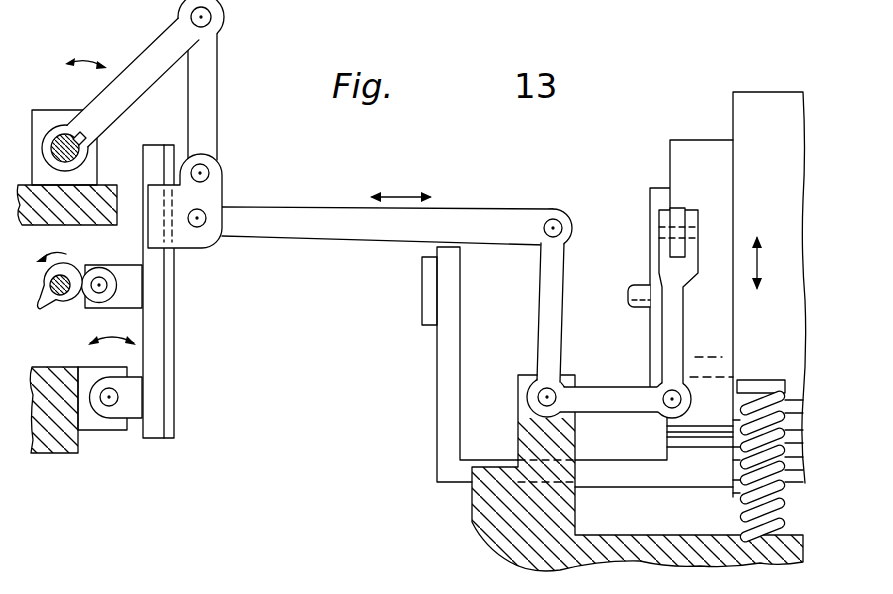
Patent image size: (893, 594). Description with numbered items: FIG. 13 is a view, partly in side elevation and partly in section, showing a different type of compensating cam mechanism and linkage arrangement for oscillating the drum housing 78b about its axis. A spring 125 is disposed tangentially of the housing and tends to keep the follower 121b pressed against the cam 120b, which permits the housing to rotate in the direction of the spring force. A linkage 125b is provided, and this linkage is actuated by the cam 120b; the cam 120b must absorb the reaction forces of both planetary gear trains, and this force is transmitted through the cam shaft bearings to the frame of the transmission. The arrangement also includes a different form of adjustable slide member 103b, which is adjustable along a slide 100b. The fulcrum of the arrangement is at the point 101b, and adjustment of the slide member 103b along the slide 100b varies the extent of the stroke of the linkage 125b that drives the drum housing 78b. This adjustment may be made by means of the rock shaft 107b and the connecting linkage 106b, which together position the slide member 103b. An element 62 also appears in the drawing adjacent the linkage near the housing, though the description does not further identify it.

The connecting linkage 106b is at (150, 48).
The rock shaft 107b is at (62, 138).
The adjustable slide member 103b is at (222, 190).
The follower 121b is at (99, 267).
The cam 120b is at (45, 299).
The slide 100b is at (174, 343).
The fulcrum point 101b is at (110, 406).
The linkage 125b is at (346, 232).
The stop 62 is at (641, 284).
The drum housing 78b is at (748, 97).
The spring 125 is at (738, 500).